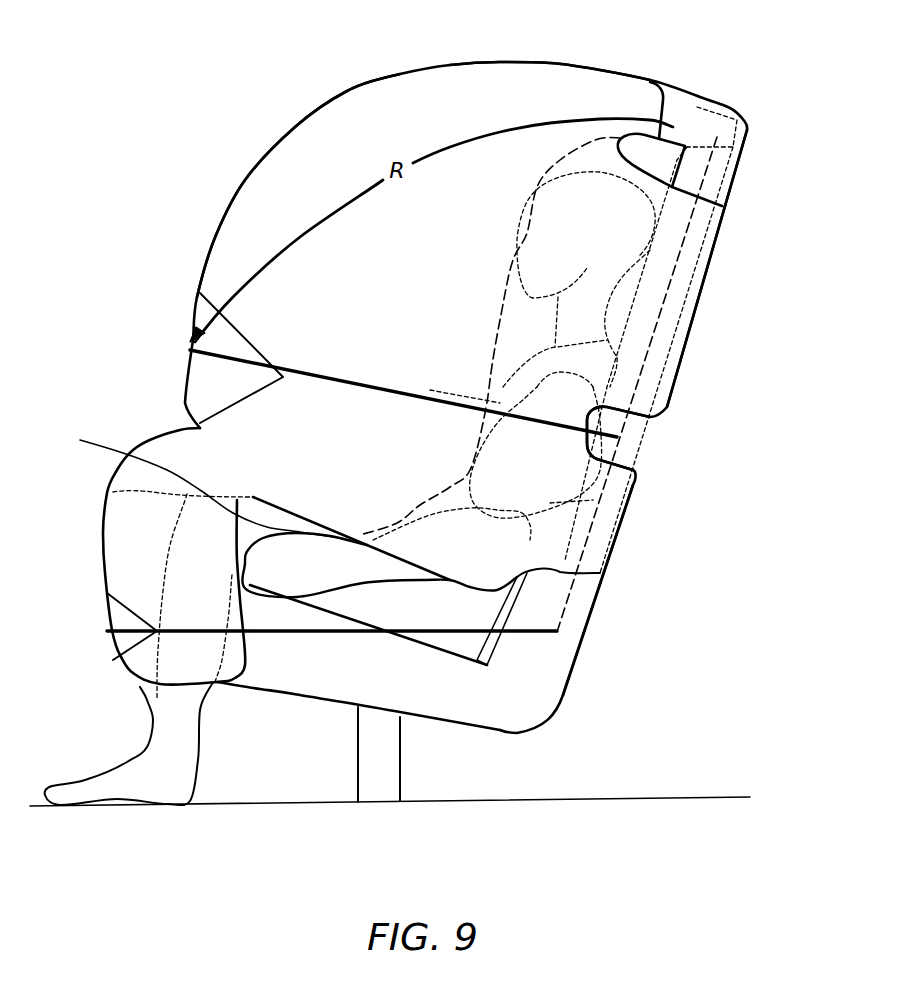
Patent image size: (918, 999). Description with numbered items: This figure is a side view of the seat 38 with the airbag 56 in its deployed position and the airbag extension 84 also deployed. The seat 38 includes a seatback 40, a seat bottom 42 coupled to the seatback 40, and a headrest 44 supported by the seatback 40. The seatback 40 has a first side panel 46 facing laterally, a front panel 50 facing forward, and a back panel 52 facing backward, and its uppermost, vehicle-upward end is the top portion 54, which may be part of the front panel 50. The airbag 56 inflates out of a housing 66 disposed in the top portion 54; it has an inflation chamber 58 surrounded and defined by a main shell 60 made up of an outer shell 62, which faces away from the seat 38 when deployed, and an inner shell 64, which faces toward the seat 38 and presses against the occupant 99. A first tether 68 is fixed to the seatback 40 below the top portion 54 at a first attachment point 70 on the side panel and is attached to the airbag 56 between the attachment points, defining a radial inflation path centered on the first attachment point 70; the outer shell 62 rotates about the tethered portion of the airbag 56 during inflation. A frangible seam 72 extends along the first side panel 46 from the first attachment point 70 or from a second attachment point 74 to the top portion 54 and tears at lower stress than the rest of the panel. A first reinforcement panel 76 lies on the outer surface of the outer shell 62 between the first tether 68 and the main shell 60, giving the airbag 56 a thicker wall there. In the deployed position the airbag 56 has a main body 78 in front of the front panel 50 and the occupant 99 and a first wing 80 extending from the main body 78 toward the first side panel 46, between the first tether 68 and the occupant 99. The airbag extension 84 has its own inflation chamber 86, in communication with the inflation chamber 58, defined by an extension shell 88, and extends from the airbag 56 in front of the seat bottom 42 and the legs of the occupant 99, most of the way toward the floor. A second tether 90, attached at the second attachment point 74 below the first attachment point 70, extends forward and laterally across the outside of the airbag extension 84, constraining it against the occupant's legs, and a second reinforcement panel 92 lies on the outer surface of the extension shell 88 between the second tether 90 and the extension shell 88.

The seat 38 is at (567, 695).
The seatback 40 is at (600, 576).
The seat bottom 42 is at (300, 700).
The headrest 44 is at (729, 195).
The first side panel 46 is at (577, 603).
The front panel 50 is at (507, 590).
The back panel 52 is at (587, 617).
The top portion 54 is at (749, 130).
The airbag 56 is at (463, 63).
The inflation chamber 58 is at (565, 80).
The main shell 60 is at (256, 176).
The outer shell 62 is at (362, 84).
The inner shell 64 is at (500, 328).
The housing 66 is at (733, 150).
The first tether 68 is at (353, 383).
The first attachment point 70 is at (617, 431).
The frangible seam 72 is at (687, 232).
The second attachment point 74 is at (557, 633).
The first reinforcement panel 76 is at (247, 338).
The main body 78 is at (206, 489).
The first wing 80 is at (693, 327).
The airbag extension 84 is at (232, 453).
The inflation chamber 86 is at (113, 492).
The extension shell 88 is at (143, 687).
The second tether 90 is at (559, 445).
The second reinforcement panel 92 is at (107, 620).
The occupant 99 is at (140, 748).